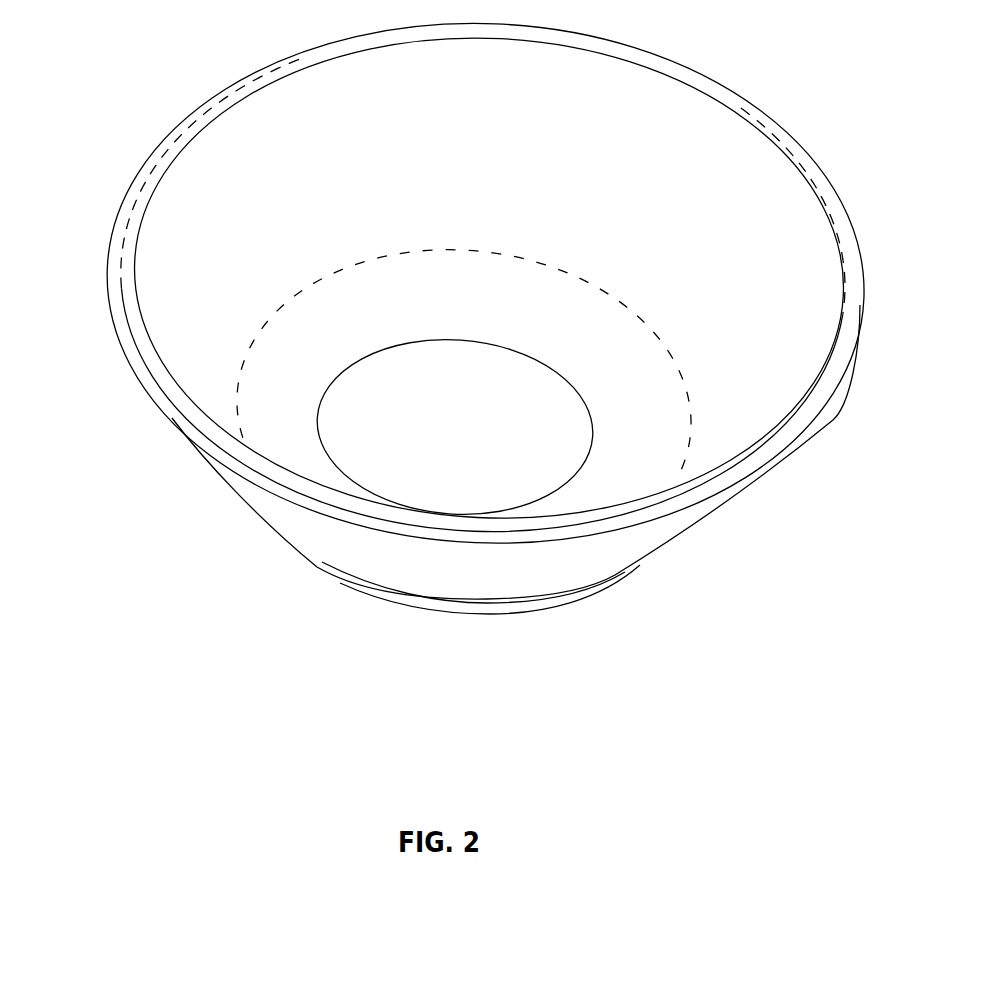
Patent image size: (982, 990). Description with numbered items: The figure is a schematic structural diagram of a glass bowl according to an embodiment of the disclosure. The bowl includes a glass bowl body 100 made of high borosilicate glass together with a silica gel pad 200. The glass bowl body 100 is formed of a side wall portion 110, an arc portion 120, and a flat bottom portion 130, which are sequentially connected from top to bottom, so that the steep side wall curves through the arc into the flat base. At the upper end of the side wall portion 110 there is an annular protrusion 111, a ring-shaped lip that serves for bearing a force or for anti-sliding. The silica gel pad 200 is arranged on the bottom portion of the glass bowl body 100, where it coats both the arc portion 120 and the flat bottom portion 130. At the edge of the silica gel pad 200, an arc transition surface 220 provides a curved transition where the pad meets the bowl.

The glass bowl body 100 is at (865, 562).
The side wall portion 110 is at (748, 320).
The annular protrusion 111 is at (208, 426).
The arc portion 120 is at (648, 422).
The flat bottom portion 130 is at (538, 458).
The silica gel pad 200 is at (317, 567).
The arc transition surface 220 is at (420, 597).